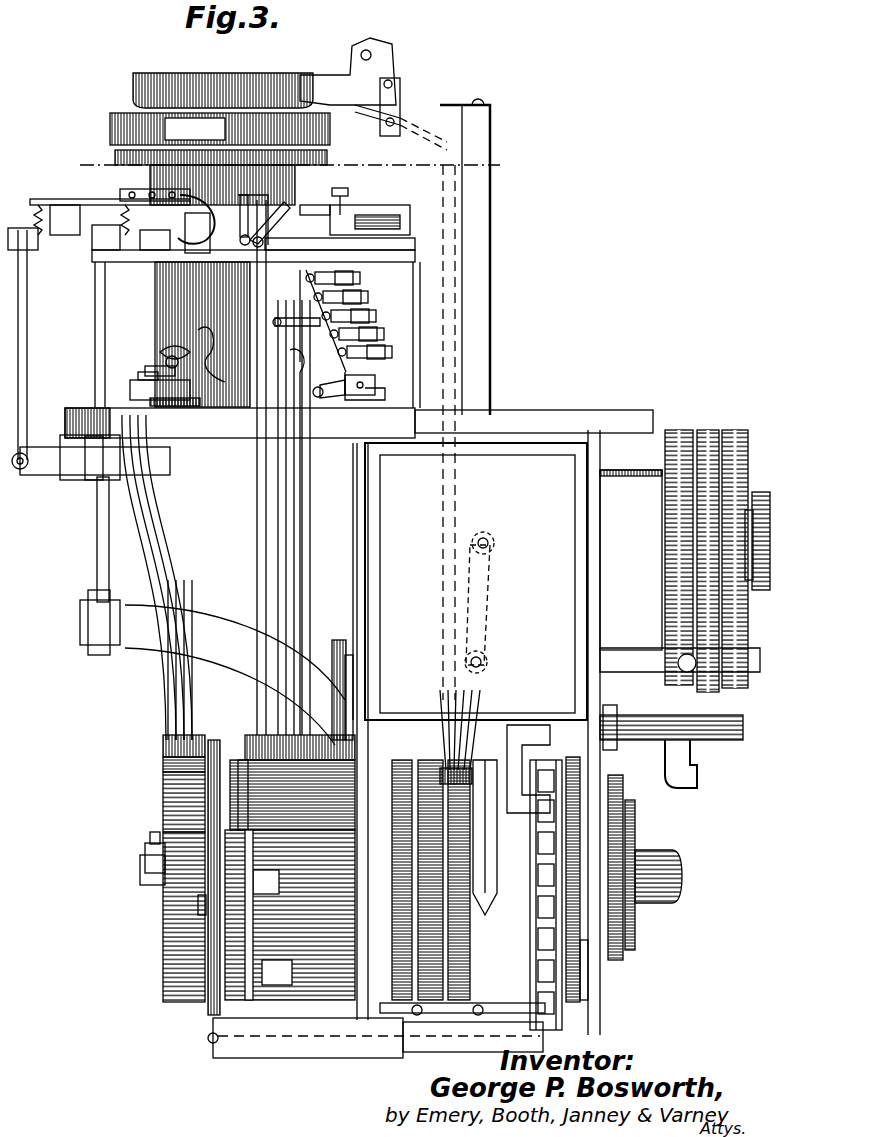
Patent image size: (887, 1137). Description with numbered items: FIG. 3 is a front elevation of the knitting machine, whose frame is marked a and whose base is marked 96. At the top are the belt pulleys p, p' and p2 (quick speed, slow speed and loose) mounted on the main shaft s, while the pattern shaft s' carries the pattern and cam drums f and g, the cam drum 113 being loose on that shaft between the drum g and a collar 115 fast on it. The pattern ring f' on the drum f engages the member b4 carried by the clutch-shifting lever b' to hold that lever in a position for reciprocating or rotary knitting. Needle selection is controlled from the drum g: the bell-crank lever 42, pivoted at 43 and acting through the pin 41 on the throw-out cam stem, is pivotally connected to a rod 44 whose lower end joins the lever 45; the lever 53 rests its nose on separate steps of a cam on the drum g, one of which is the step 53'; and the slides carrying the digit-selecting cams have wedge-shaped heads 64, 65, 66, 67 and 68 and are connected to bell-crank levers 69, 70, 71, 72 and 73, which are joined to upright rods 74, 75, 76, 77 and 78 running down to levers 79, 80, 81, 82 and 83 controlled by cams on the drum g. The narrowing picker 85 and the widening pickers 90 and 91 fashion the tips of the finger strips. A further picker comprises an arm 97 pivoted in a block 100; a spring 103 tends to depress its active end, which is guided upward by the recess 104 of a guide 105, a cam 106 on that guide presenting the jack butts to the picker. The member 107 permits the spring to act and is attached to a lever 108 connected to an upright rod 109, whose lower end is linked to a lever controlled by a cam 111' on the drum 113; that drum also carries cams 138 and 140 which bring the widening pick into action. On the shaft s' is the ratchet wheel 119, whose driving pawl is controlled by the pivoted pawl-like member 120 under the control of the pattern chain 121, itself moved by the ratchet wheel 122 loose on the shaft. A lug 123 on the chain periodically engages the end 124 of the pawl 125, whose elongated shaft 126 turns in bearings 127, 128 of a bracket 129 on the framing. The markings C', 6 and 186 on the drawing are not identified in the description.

The cylinder C' is at (290, 94).
The section line 6 is at (289, 163).
The widening picker 90 is at (110, 200).
The widening picker 91 is at (207, 219).
The bell-crank lever 42 is at (210, 233).
The pin 41 is at (261, 220).
The pivot 43 is at (237, 251).
The bell-crank lever 73 is at (253, 253).
The narrowing picker 85 is at (297, 205).
The wedge-shaped head 68 is at (360, 279).
The wedge-shaped head 67 is at (368, 298).
The wedge-shaped head 66 is at (376, 316).
The wedge-shaped head 65 is at (384, 334).
The wedge-shaped head 64 is at (392, 352).
The bell-crank lever 70 is at (376, 388).
The bell-crank lever 69 is at (376, 402).
The recess 104 is at (219, 351).
The guide 105 is at (170, 352).
The picker arm 97 is at (168, 360).
The block 100 is at (150, 370).
The member 107 is at (138, 374).
The spring 103 is at (130, 388).
The cam 106 is at (225, 410).
The lever 108 is at (149, 577).
The bell-crank lever 72 is at (296, 348).
The bell-crank lever 71 is at (302, 362).
The base 96 is at (68, 430).
The frame a is at (395, 580).
The clutch-shifting lever b' is at (492, 602).
The rod 44 is at (262, 490).
The upright rod 78 is at (278, 456).
The upright rod 77 is at (286, 483).
The upright rod 76 is at (294, 503).
The upright rod 75 is at (302, 521).
The upright rod 74 is at (310, 542).
The quick-speed pulley p is at (677, 544).
The slow-speed pulley p' is at (708, 547).
The loose pulley p2 is at (736, 545).
The main shaft s is at (757, 554).
The upright rod 109 is at (165, 665).
The cam 111' is at (161, 802).
The collar 115 is at (160, 884).
The cam 140 is at (150, 858).
The cam 138 is at (200, 905).
The cam drum 113 is at (185, 942).
The gear 186 is at (220, 962).
The step 53' is at (206, 878).
The lever 53 is at (289, 690).
The lever 45 is at (250, 740).
The pattern or cam drum g is at (315, 975).
The lever 83 is at (262, 790).
The lever 81 is at (292, 790).
The lever 79 is at (322, 790).
The lever 82 is at (277, 790).
The lever 80 is at (307, 790).
The bearing 127 is at (340, 1030).
The bearing 128 is at (476, 1030).
The bracket 129 is at (395, 1030).
The elongated shaft 126 is at (212, 1040).
The pattern drum f is at (449, 880).
The member b4 is at (478, 740).
The pattern ring f' is at (492, 837).
The pawl-like member 120 is at (522, 740).
The pattern chain 121 is at (575, 1010).
The ratchet wheel 122 is at (580, 820).
The lug 123 is at (558, 836).
The end of pawl 124 is at (623, 920).
The pawl 125 is at (636, 958).
The ratchet wheel 119 is at (588, 975).
The pattern shaft s' is at (669, 876).